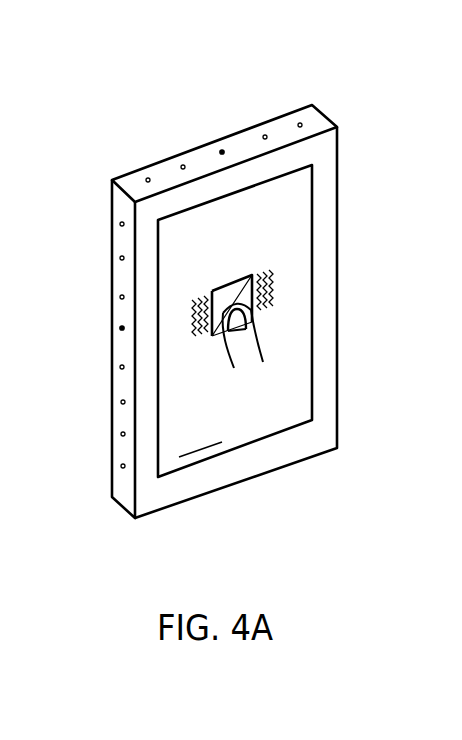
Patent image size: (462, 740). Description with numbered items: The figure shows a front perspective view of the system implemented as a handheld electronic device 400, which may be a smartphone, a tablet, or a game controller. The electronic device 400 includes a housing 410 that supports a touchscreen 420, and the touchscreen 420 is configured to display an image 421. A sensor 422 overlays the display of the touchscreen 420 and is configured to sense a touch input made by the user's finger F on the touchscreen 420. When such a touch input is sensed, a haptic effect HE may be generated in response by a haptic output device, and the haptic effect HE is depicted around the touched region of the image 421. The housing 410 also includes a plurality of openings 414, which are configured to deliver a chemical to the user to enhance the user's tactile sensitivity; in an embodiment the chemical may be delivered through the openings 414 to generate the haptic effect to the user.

The handheld electronic device 400 is at (127, 111).
The housing 410 is at (325, 355).
The openings 414 is at (222, 152).
The touchscreen 420 is at (282, 217).
The image 421 is at (252, 271).
The sensor 422 is at (196, 437).
The haptic effect HE is at (277, 291).
The finger F is at (237, 358).